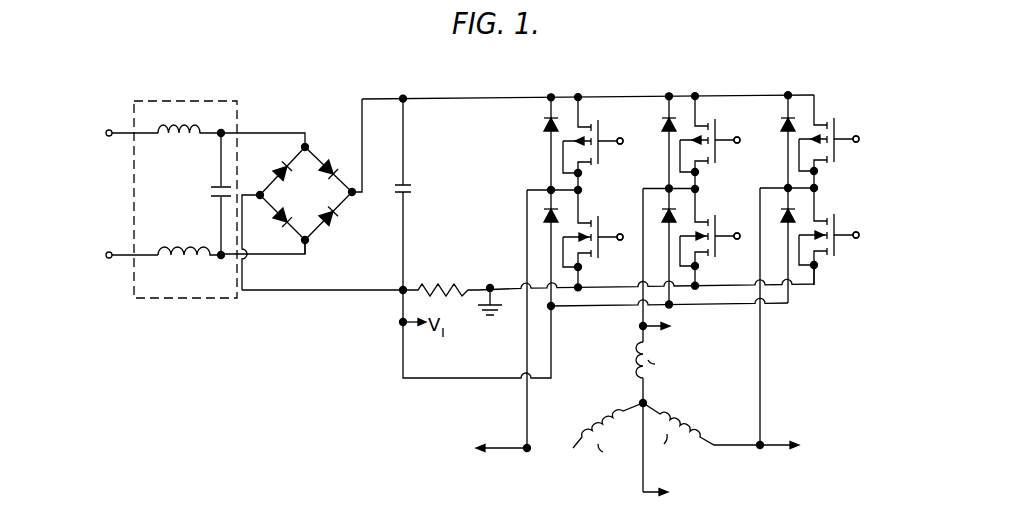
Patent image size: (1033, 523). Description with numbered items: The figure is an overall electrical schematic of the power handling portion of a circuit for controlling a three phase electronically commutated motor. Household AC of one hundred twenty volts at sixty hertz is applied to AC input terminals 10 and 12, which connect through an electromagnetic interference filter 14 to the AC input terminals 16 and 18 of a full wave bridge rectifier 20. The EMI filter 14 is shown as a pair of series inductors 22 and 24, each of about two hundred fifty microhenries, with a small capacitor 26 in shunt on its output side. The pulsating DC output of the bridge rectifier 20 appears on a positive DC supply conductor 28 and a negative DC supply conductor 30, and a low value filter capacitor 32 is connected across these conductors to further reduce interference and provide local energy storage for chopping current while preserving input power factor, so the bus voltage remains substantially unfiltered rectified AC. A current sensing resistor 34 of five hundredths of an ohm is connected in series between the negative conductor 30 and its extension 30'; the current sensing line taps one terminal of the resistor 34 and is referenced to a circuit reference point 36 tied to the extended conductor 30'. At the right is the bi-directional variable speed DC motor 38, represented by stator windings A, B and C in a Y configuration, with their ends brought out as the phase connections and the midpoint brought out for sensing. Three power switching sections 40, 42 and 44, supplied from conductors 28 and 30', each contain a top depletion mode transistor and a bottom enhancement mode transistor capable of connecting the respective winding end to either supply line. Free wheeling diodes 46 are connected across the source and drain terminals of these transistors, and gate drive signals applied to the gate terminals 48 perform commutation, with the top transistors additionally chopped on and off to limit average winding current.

The AC input terminal 10 is at (105, 138).
The AC input terminal 12 is at (105, 258).
The electromagnetic interference (EMI) filter 14 is at (207, 300).
The AC input terminal of bridge rectifier 16 is at (307, 146).
The AC input terminal of bridge rectifier 18 is at (313, 243).
The full wave bridge rectifier 20 is at (267, 123).
The series inductor 22 is at (180, 141).
The series inductor 24 is at (201, 242).
The capacitor 26 is at (213, 188).
The positive DC supply conductor 28 is at (481, 96).
The negative DC supply conductor 30 is at (324, 311).
The extension of negative DC supply conductor 30' is at (641, 268).
The filter capacitor 32 is at (410, 184).
The current sensing resistor 34 is at (437, 284).
The circuit reference point 36 is at (489, 310).
The electronically commutated DC motor 38 is at (692, 400).
The power switching section 40 is at (587, 86).
The power switching section 42 is at (700, 85).
The power switching section 44 is at (823, 82).
The free wheeling diode 46 is at (543, 125).
The gate terminal 48 is at (620, 144).